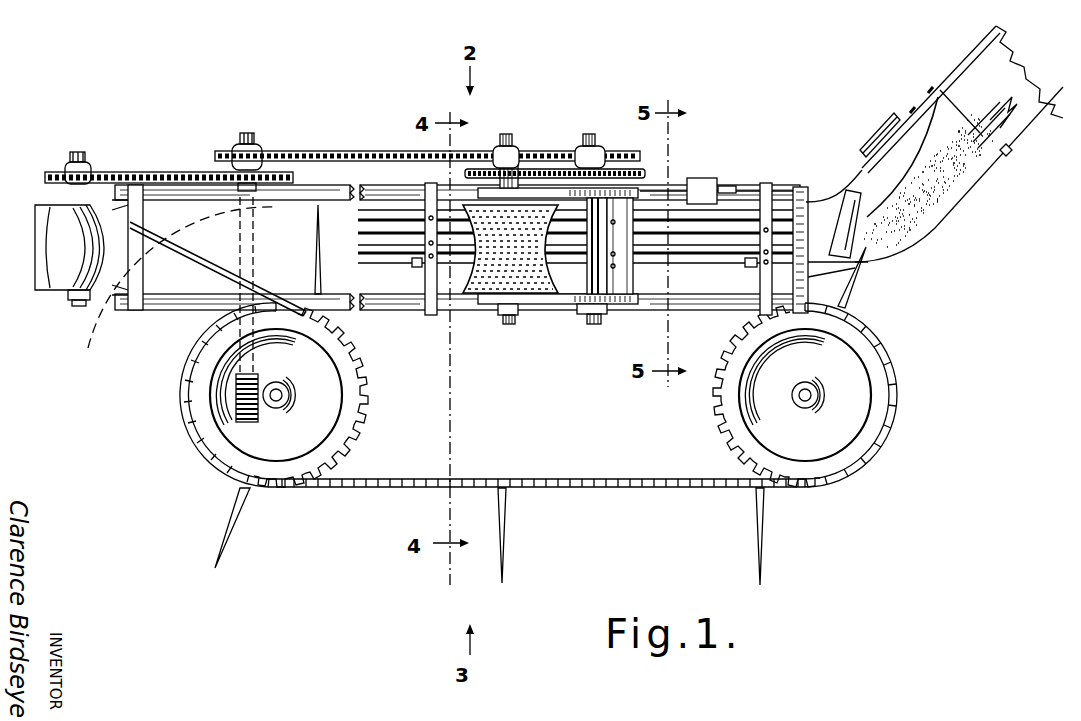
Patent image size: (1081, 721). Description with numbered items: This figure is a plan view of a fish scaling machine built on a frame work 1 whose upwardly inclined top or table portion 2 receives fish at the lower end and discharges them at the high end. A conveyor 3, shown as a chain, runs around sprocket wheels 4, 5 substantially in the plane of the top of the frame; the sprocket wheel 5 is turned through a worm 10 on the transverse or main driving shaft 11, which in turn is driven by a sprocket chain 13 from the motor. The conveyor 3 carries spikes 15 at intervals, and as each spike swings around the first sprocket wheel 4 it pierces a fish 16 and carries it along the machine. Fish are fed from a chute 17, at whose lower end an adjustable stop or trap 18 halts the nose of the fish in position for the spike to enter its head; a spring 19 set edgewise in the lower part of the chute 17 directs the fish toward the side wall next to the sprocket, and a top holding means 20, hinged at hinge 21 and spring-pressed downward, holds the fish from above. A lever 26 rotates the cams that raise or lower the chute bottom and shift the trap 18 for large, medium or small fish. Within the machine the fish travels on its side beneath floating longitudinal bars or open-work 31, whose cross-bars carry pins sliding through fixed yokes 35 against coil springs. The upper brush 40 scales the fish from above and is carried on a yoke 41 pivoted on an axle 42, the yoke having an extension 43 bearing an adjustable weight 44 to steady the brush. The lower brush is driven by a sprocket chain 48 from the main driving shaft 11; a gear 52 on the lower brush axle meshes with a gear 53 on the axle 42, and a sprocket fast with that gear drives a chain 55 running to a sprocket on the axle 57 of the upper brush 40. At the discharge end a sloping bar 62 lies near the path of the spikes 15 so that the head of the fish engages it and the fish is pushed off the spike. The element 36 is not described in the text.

The frame work 1 is at (158, 312).
The top or table portion 2 is at (583, 250).
The conveyor 3 is at (590, 462).
The sprocket wheel 4 is at (52, 243).
The sprocket wheel 5 is at (337, 416).
The worm 10 is at (232, 412).
The transverse or main driving shaft 11 is at (246, 133).
The sprocket chain 13 is at (157, 172).
The spikes 15 is at (315, 245).
The fish 16 is at (913, 233).
The chute 17 is at (1008, 40).
The adjustable stop or trap 18 is at (842, 222).
The spring 19 is at (935, 128).
The top holding means 20 is at (975, 158).
The hinge 21 is at (963, 114).
The lever 26 is at (893, 121).
The longitudinal bars or open-work 31 is at (783, 220).
The fixed yokes 35 is at (432, 315).
The stops 36 is at (416, 267).
The brush 40 is at (500, 278).
The yoke 41 is at (540, 187).
The axle 42 is at (590, 323).
The extension 43 is at (730, 186).
The adjustable weight 44 is at (706, 180).
The sprocket chain 48 is at (360, 152).
The gear 52 is at (473, 165).
The gear 53 is at (645, 172).
The chain 55 is at (563, 148).
The axle 57 is at (512, 325).
The sloping bar 62 is at (203, 258).